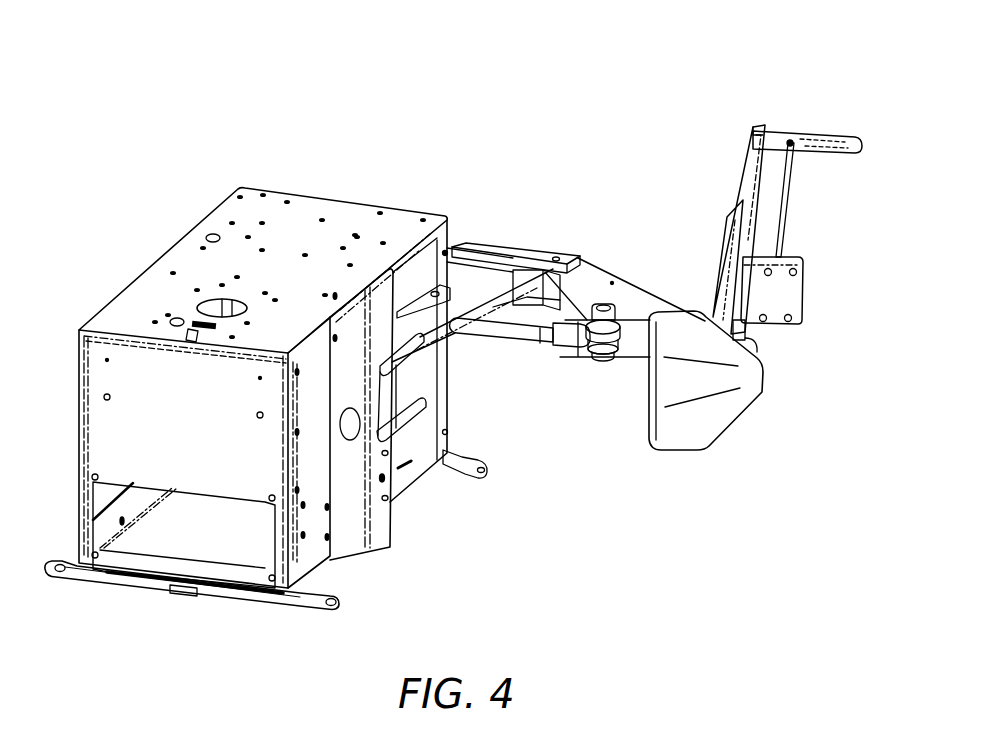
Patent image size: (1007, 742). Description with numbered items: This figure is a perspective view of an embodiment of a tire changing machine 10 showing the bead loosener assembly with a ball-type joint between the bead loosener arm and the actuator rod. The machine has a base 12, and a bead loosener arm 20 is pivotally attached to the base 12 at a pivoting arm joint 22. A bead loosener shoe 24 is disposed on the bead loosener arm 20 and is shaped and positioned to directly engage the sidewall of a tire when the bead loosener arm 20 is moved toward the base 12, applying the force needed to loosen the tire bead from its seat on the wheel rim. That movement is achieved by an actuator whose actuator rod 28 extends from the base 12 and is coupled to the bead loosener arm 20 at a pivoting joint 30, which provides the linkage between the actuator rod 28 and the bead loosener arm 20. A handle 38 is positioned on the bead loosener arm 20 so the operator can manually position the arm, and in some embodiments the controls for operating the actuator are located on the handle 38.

The tire changing machine 10 is at (645, 111).
The base 12 is at (360, 212).
The bead loosener arm 20 is at (635, 292).
The pivoting arm joint 22 is at (556, 256).
The bead loosener shoe 24 is at (663, 433).
The actuator rod 28 is at (508, 330).
The pivoting joint 30 is at (582, 350).
The handle 38 is at (812, 137).